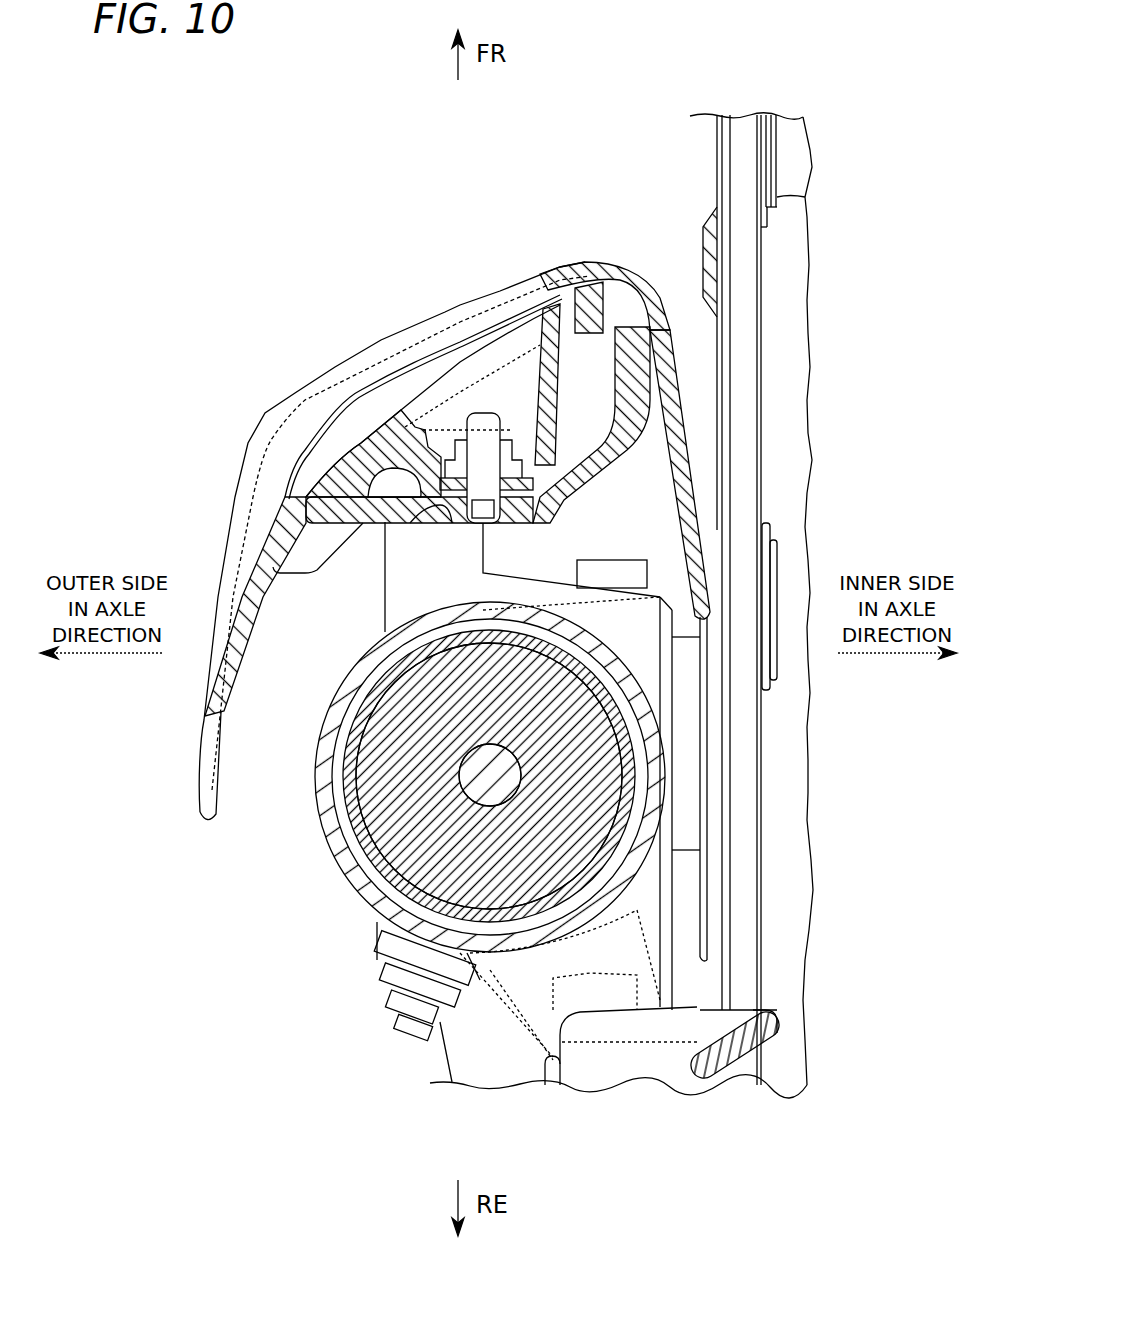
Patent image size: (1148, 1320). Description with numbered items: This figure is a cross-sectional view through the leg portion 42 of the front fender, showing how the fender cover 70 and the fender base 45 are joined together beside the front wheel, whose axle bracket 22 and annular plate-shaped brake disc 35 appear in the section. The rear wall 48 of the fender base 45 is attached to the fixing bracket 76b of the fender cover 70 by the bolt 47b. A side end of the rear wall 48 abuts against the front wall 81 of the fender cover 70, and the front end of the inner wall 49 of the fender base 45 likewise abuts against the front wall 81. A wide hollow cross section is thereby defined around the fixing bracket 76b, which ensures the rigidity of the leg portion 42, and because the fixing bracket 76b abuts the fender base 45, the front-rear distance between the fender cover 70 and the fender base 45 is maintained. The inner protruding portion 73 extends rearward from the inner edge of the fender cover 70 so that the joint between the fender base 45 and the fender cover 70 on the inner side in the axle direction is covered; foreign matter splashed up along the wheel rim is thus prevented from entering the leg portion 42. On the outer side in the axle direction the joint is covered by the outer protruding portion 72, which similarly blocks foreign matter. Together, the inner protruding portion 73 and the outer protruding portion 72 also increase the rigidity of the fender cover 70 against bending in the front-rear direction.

The axle bracket 22 is at (353, 878).
The brake disc 35 is at (700, 1000).
The leg portion 42 is at (548, 256).
The fender base 45 is at (597, 497).
The bolt 47b is at (545, 540).
The rear wall 48 is at (360, 530).
The inner wall 49 is at (668, 283).
The fender cover 70 is at (283, 410).
The outer protruding portion 72 is at (237, 587).
The inner protruding portion 73 is at (700, 493).
The fixing bracket 76b is at (530, 450).
The front wall 81 is at (350, 432).